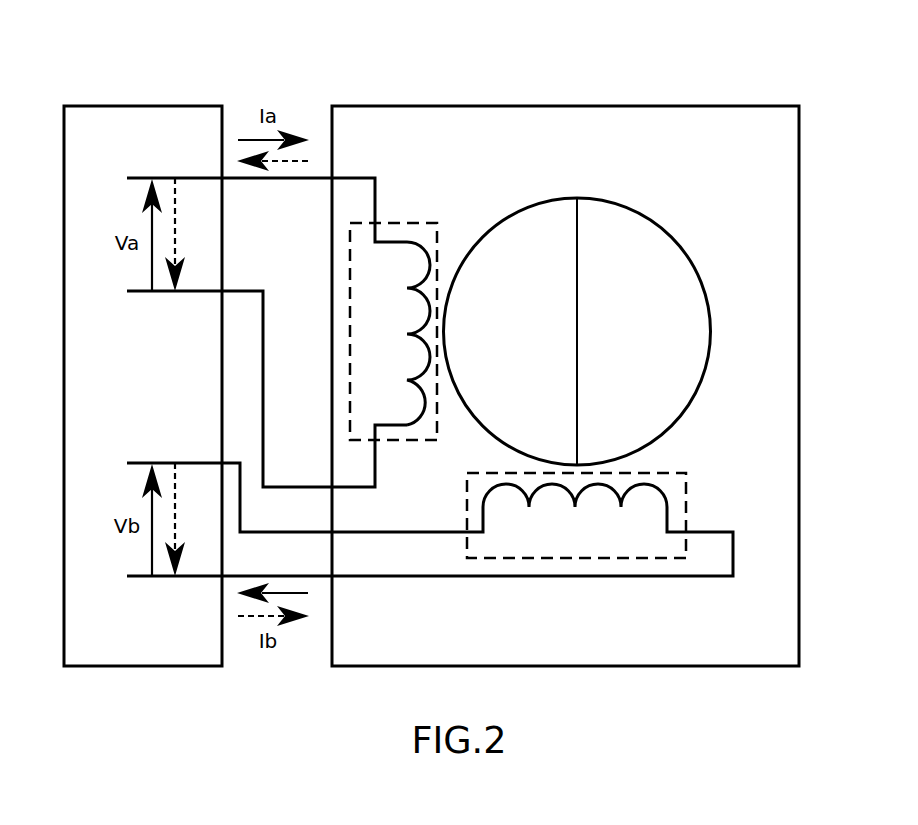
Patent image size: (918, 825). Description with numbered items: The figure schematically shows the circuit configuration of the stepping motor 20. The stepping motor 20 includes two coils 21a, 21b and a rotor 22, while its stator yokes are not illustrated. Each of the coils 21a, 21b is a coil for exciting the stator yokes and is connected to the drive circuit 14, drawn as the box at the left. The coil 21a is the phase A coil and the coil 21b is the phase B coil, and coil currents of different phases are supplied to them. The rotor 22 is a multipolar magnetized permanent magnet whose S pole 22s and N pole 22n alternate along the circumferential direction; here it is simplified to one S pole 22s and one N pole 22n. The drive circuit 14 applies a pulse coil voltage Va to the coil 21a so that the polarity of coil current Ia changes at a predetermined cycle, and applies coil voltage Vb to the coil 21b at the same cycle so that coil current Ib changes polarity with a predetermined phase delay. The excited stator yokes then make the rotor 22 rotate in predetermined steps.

The drive circuit 14 is at (163, 104).
The stepping motor 20 is at (657, 104).
The coil 21a is at (410, 218).
The coil 21b is at (696, 497).
The rotor 22 is at (665, 222).
The S pole 22s is at (517, 245).
The N pole 22n is at (658, 382).